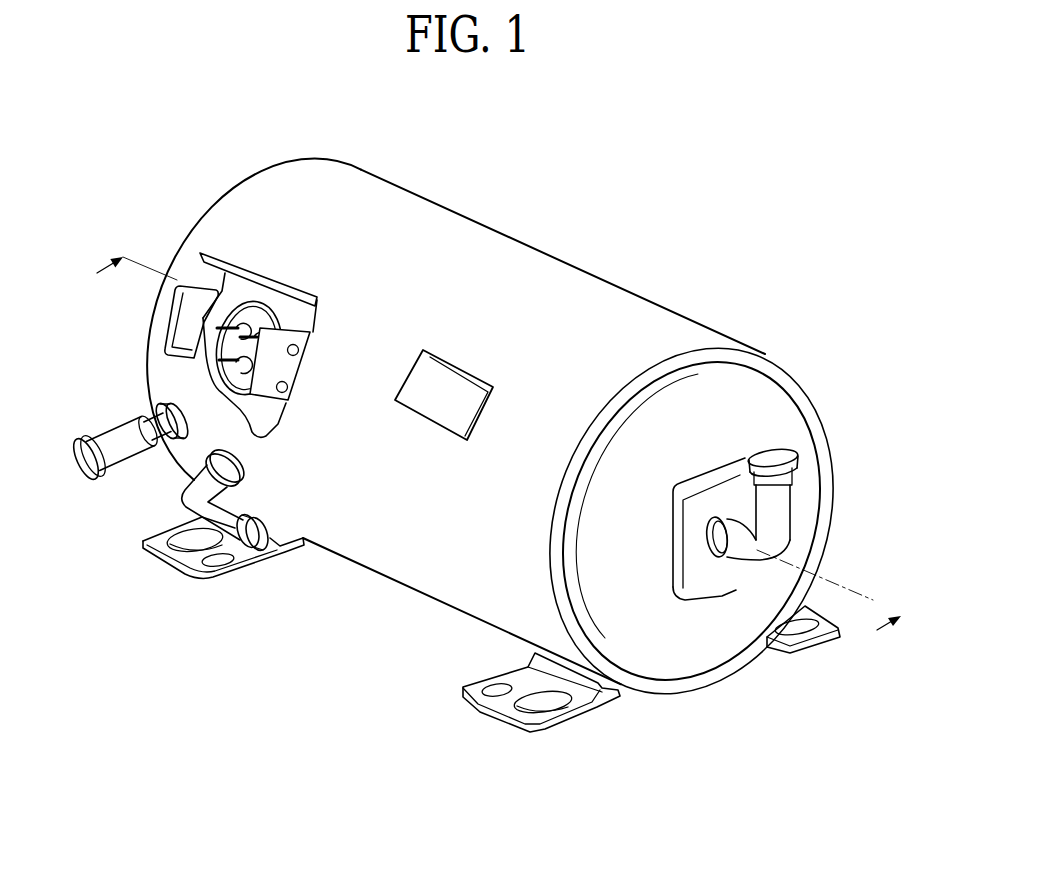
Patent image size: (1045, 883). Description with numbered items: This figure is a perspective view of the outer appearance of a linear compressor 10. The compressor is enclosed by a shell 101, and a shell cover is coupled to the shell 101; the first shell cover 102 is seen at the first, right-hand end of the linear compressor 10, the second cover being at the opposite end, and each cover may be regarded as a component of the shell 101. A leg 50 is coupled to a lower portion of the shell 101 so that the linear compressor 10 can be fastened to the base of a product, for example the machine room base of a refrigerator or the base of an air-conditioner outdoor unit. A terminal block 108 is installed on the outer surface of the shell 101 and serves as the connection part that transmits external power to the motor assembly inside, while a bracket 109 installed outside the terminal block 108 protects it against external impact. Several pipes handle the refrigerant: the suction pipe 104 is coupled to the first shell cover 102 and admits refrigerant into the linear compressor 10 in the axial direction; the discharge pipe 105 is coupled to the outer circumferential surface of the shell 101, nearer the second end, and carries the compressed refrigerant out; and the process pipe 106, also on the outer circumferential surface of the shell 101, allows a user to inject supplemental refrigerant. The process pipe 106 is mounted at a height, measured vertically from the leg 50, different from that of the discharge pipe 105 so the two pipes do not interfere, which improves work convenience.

The linear compressor 10 is at (577, 195).
The shell 101 is at (603, 306).
The first shell cover 102 is at (763, 407).
The suction pipe 104 is at (740, 550).
The discharge pipe 105 is at (195, 497).
The process pipe 106 is at (120, 432).
The terminal block 108 is at (215, 303).
The bracket 109 is at (247, 268).
The leg 50 is at (463, 686).